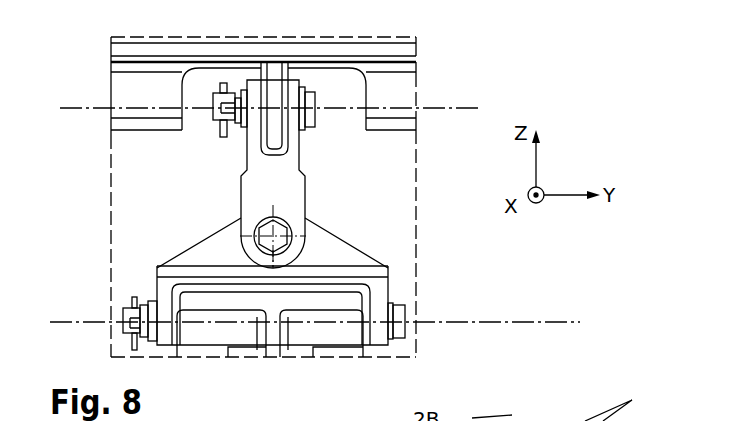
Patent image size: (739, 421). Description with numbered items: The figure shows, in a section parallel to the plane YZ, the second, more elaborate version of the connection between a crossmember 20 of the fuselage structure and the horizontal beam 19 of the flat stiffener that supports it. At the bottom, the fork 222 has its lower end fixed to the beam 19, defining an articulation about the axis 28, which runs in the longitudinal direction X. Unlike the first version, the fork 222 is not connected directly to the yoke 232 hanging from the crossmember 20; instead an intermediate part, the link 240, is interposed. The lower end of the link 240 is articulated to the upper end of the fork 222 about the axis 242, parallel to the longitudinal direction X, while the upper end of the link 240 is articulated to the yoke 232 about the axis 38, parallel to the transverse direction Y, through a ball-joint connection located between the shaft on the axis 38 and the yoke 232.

The crossmember 20 is at (127, 92).
The axis 38 is at (463, 110).
The yoke 232 is at (268, 141).
The link 240 is at (275, 188).
The axis 242 is at (255, 246).
The fork 222 is at (356, 251).
The axis 28 is at (498, 322).
The horizontal beam 19 is at (190, 300).